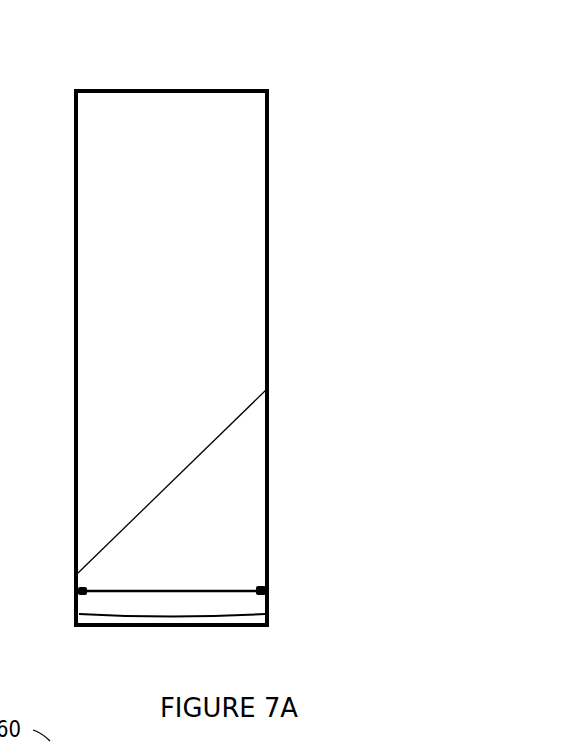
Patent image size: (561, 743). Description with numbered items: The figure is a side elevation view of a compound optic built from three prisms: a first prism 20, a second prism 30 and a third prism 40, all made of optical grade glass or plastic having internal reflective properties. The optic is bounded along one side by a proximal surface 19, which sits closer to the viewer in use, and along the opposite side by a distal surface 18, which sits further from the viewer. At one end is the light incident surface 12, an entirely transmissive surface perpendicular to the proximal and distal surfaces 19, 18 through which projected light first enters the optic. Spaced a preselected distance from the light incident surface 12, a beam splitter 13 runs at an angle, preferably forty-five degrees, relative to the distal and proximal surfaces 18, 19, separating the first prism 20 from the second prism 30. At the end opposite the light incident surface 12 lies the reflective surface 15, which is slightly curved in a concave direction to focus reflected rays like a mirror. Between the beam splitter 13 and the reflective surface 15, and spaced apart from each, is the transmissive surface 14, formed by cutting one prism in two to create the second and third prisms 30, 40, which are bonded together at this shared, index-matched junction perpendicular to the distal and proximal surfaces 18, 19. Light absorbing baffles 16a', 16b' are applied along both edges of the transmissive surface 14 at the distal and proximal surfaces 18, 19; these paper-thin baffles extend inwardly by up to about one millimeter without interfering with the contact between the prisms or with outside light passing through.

The light incident surface 12 is at (193, 90).
The distal surface 18 is at (74, 147).
The proximal surface 19 is at (269, 145).
The reflective surface 15 is at (130, 627).
The beam splitter 13 is at (140, 512).
The transmissive surface 14 is at (152, 592).
The third prism 40 is at (210, 606).
The light absorbing baffle 16a' is at (48, 614).
The light absorbing baffle 16b' is at (294, 567).
The first prism 20 is at (185, 276).
The second prism 30 is at (215, 542).